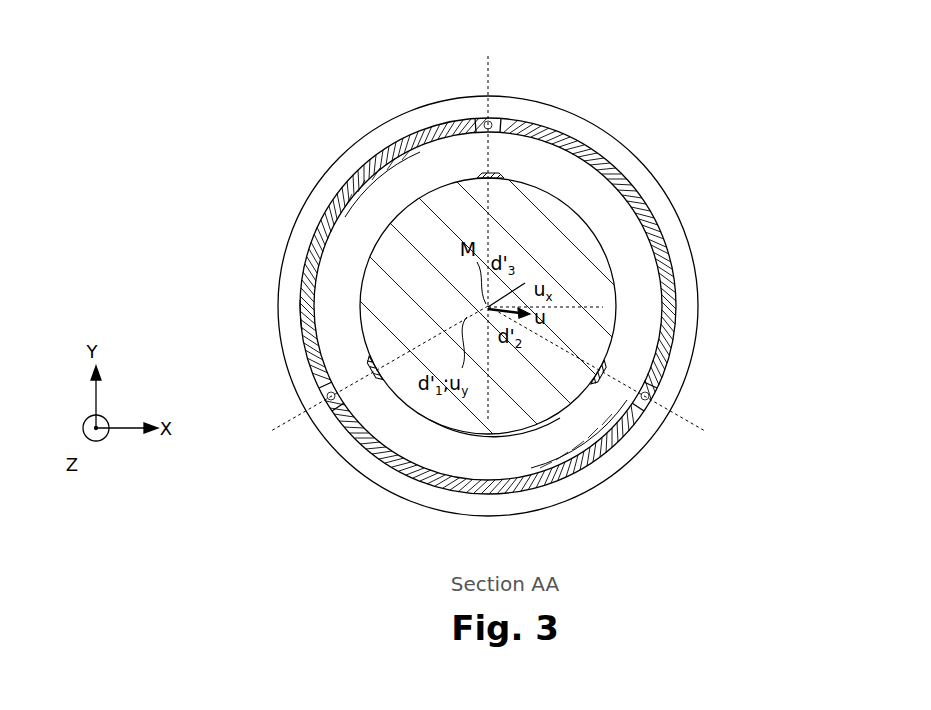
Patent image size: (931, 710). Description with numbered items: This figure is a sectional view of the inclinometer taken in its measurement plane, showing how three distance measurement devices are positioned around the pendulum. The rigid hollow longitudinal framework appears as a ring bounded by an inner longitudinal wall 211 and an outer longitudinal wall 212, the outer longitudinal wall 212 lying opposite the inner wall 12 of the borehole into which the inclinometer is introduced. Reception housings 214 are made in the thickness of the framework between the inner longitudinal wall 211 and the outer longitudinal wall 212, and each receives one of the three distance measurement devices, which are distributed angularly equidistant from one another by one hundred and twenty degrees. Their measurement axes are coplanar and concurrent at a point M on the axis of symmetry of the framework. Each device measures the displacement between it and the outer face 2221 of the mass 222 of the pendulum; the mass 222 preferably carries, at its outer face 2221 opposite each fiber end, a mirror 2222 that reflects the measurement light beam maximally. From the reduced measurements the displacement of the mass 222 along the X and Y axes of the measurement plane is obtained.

The inner wall of the borehole 12 is at (642, 158).
The inner longitudinal wall 211 is at (407, 430).
The outer longitudinal wall 212 is at (428, 490).
The reception housing 214 is at (485, 124).
The mass 222 is at (506, 415).
The outer face 2221 is at (549, 418).
The mirror 2222 is at (480, 172).